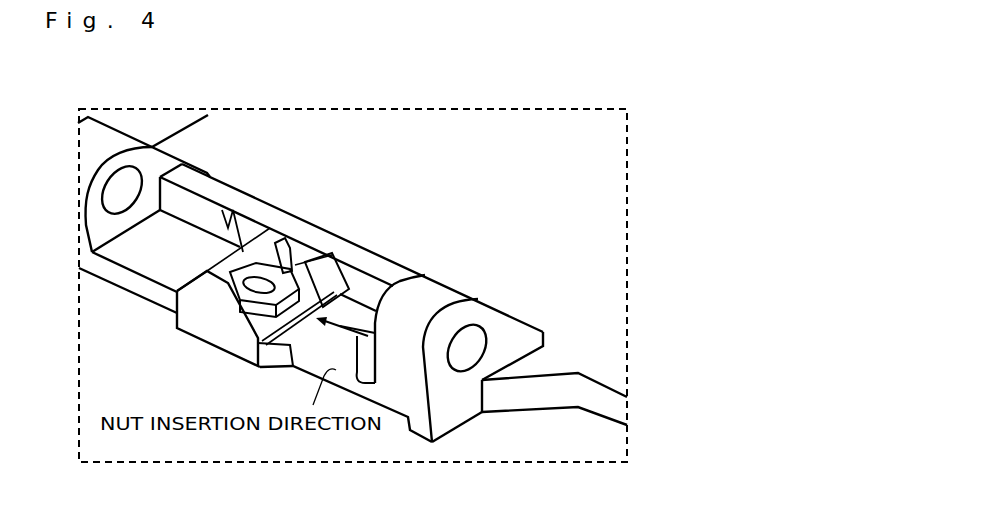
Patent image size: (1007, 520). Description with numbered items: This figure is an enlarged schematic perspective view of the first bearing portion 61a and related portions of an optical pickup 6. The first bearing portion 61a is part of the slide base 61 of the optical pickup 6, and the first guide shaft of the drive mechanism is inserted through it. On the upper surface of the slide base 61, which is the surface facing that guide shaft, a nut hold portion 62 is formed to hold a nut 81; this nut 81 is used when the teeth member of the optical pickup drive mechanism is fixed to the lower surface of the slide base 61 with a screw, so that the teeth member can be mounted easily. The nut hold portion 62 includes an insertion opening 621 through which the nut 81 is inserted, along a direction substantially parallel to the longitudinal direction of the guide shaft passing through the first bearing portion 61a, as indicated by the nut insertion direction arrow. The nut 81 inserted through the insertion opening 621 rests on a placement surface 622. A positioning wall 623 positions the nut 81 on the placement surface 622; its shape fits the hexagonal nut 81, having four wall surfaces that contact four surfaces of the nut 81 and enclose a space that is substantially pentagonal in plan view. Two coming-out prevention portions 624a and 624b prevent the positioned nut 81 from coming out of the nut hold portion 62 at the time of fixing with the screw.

The optical pickup 6 is at (540, 97).
The slide base 61 is at (598, 323).
The first bearing portion 61a is at (97, 150).
The nut hold portion 62 is at (264, 258).
The nut 81 is at (342, 250).
The insertion opening 621 is at (375, 270).
The placement surface 622 is at (292, 324).
The positioning wall 623 is at (223, 208).
The coming-out prevention portion 624a is at (300, 232).
The coming-out prevention portion 624b is at (237, 282).